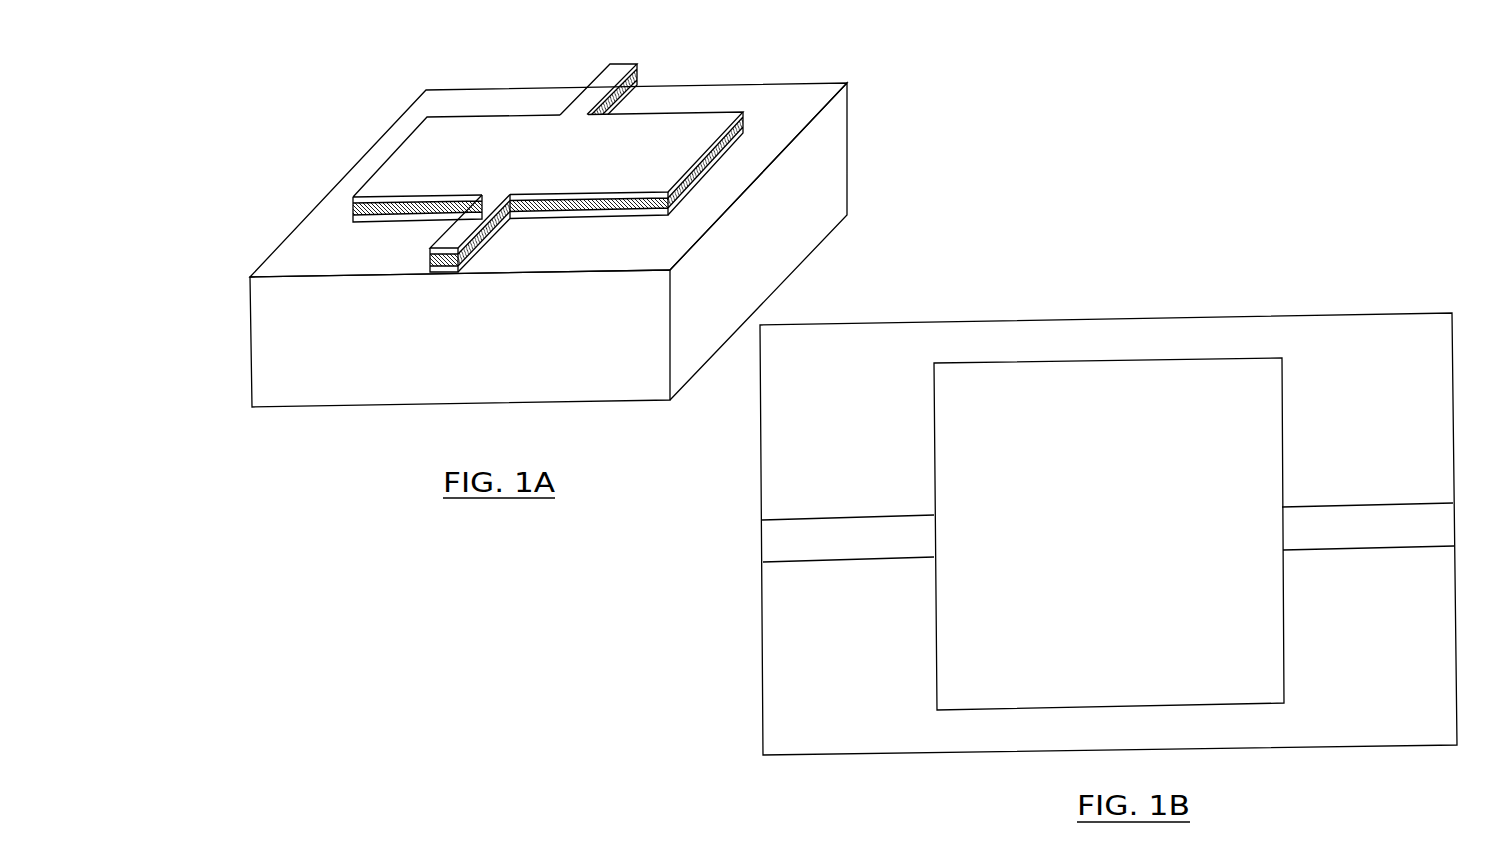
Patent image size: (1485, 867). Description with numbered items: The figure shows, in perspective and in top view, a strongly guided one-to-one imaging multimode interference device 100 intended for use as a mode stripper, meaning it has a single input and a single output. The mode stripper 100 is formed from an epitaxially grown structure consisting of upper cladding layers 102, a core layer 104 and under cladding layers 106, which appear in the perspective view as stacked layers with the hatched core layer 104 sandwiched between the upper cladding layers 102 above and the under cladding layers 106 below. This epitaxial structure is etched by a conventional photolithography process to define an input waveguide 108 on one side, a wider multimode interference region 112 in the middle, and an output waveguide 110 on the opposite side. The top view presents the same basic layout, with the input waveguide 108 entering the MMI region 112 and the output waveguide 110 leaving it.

In FIG. 1A, the multimode interference device 100 is at (476, 211).
In FIG. 1B, the multimode interference device 100 is at (1108, 503).
In FIG. 1A, the upper cladding layers 102 is at (754, 103).
In FIG. 1A, the core layer 104 is at (341, 208).
In FIG. 1A, the under cladding layers 106 is at (655, 369).
In FIG. 1A, the input waveguide 108 is at (420, 258).
In FIG. 1B, the input waveguide 108 is at (912, 551).
In FIG. 1A, the output waveguide 110 is at (589, 68).
In FIG. 1B, the output waveguide 110 is at (1450, 542).
In FIG. 1A, the multimode interference (MMI) region 112 is at (623, 182).
In FIG. 1B, the multimode interference (MMI) region 112 is at (1130, 576).